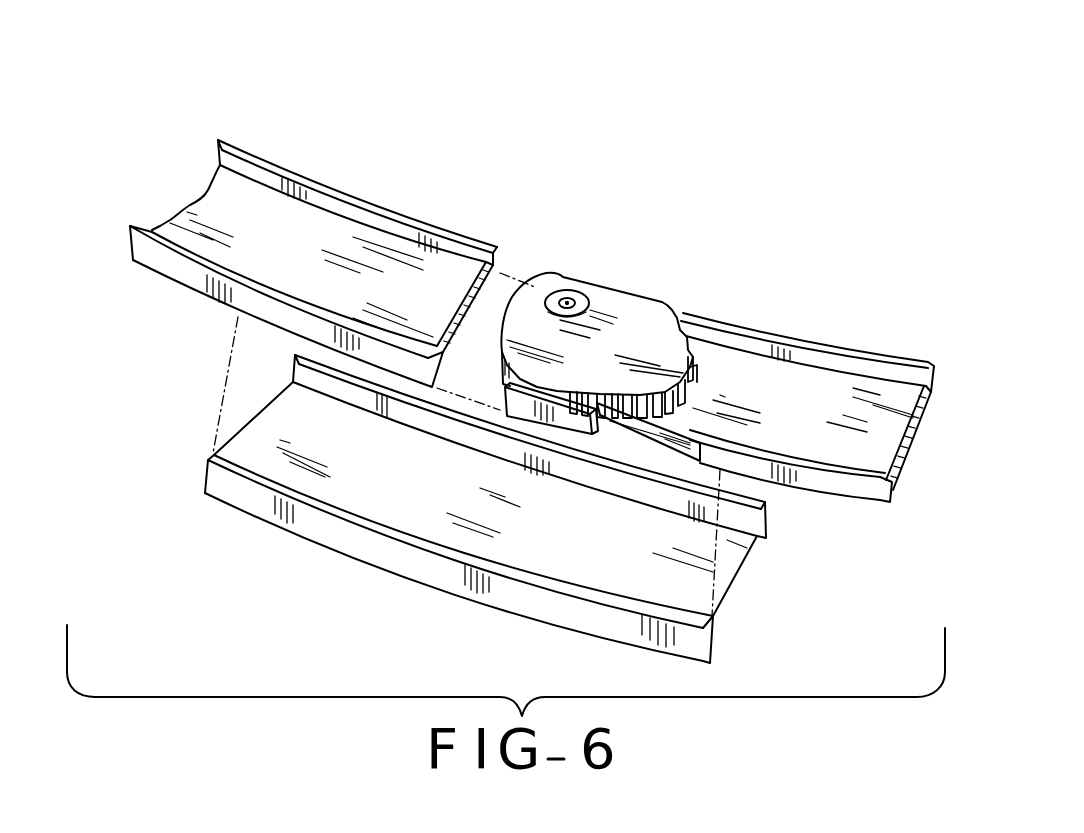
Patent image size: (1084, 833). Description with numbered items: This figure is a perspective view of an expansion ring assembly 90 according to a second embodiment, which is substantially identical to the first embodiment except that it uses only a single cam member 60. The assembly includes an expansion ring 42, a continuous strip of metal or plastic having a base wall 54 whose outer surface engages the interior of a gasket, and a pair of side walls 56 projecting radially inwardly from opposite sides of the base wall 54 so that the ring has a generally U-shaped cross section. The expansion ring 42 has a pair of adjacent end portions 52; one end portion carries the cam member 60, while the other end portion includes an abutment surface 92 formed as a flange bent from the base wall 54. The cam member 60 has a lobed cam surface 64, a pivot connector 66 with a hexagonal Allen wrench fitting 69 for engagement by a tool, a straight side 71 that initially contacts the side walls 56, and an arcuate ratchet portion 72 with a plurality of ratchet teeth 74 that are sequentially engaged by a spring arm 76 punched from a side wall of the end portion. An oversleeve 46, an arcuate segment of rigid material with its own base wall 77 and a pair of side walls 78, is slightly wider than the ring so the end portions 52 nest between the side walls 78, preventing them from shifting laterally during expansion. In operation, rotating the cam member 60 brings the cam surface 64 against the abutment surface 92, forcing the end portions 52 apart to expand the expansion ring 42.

The expansion ring assembly 90 is at (690, 122).
The end portions 52 is at (246, 190).
The expansion ring 42 is at (532, 335).
The base wall 54 is at (342, 290).
The side walls 56 is at (327, 200).
The abutment surface 92 is at (475, 302).
The oversleeve 46 is at (315, 548).
The base wall 77 is at (412, 495).
The side walls 78 is at (397, 553).
The cam member 60 is at (662, 289).
The cam surface 64 is at (505, 318).
The pivot connector 66 is at (588, 297).
The hexagonal Allen wrench fitting 69 is at (568, 300).
The straight side 71 is at (664, 285).
The ratchet teeth 74 is at (690, 375).
The arcuate ratchet portion 72 is at (601, 395).
The spring arm 76 is at (612, 424).